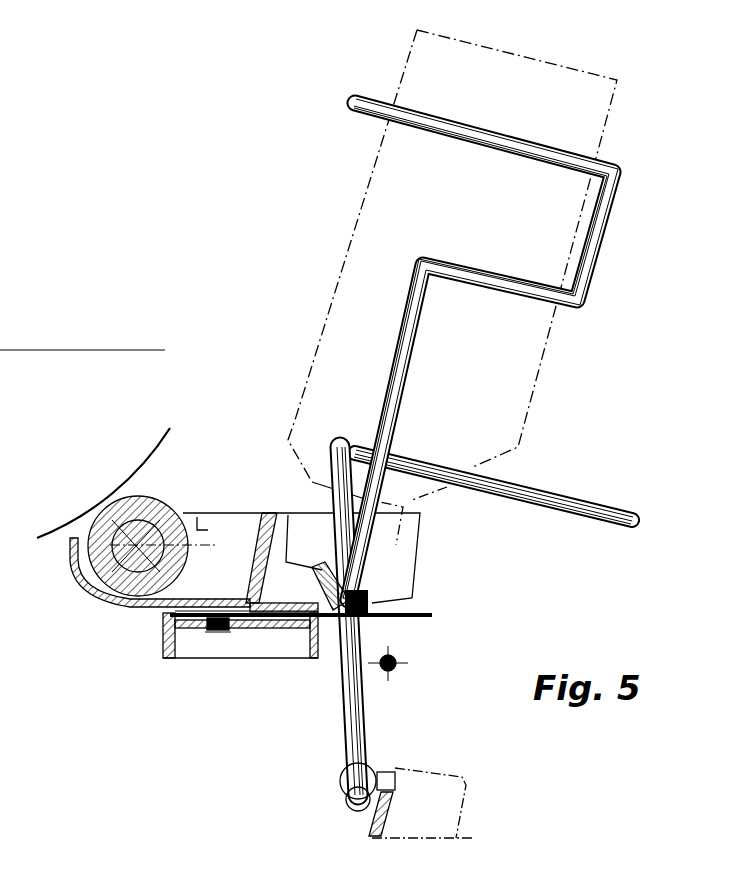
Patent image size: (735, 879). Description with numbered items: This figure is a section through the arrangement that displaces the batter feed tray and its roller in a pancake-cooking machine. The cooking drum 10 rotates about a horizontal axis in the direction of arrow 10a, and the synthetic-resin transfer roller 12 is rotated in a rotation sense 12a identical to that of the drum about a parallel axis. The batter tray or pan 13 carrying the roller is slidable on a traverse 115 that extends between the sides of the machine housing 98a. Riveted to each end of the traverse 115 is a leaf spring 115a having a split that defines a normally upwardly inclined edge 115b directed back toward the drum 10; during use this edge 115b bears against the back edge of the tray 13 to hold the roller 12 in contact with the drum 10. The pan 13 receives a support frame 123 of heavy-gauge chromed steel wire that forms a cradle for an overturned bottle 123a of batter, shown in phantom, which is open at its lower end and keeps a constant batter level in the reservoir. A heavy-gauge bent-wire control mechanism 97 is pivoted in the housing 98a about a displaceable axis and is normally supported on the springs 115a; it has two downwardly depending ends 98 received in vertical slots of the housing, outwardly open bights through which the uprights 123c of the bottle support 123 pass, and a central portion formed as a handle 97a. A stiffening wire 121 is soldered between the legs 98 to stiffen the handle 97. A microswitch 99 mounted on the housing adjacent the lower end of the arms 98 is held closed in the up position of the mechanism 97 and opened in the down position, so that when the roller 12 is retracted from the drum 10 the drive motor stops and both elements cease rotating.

The cooking drum 10 is at (158, 455).
The arrow 10a is at (126, 471).
The transfer roller 12 is at (103, 573).
The rotation sense 12a is at (153, 492).
The feed tray 13 is at (207, 598).
The traverse 115 is at (305, 648).
The leaf spring 115a is at (240, 630).
The upwardly inclined edge 115b is at (343, 625).
The stiffening wire 121 is at (398, 662).
The downwardly depending ends 98 is at (372, 722).
The machine housing 98a is at (343, 782).
The microswitch 99 is at (392, 775).
The bent-wire control mechanism 97 is at (620, 506).
The handle 97a is at (545, 500).
The support frame 123 is at (505, 133).
The bottle 123a is at (622, 103).
The uprights 123c is at (408, 345).